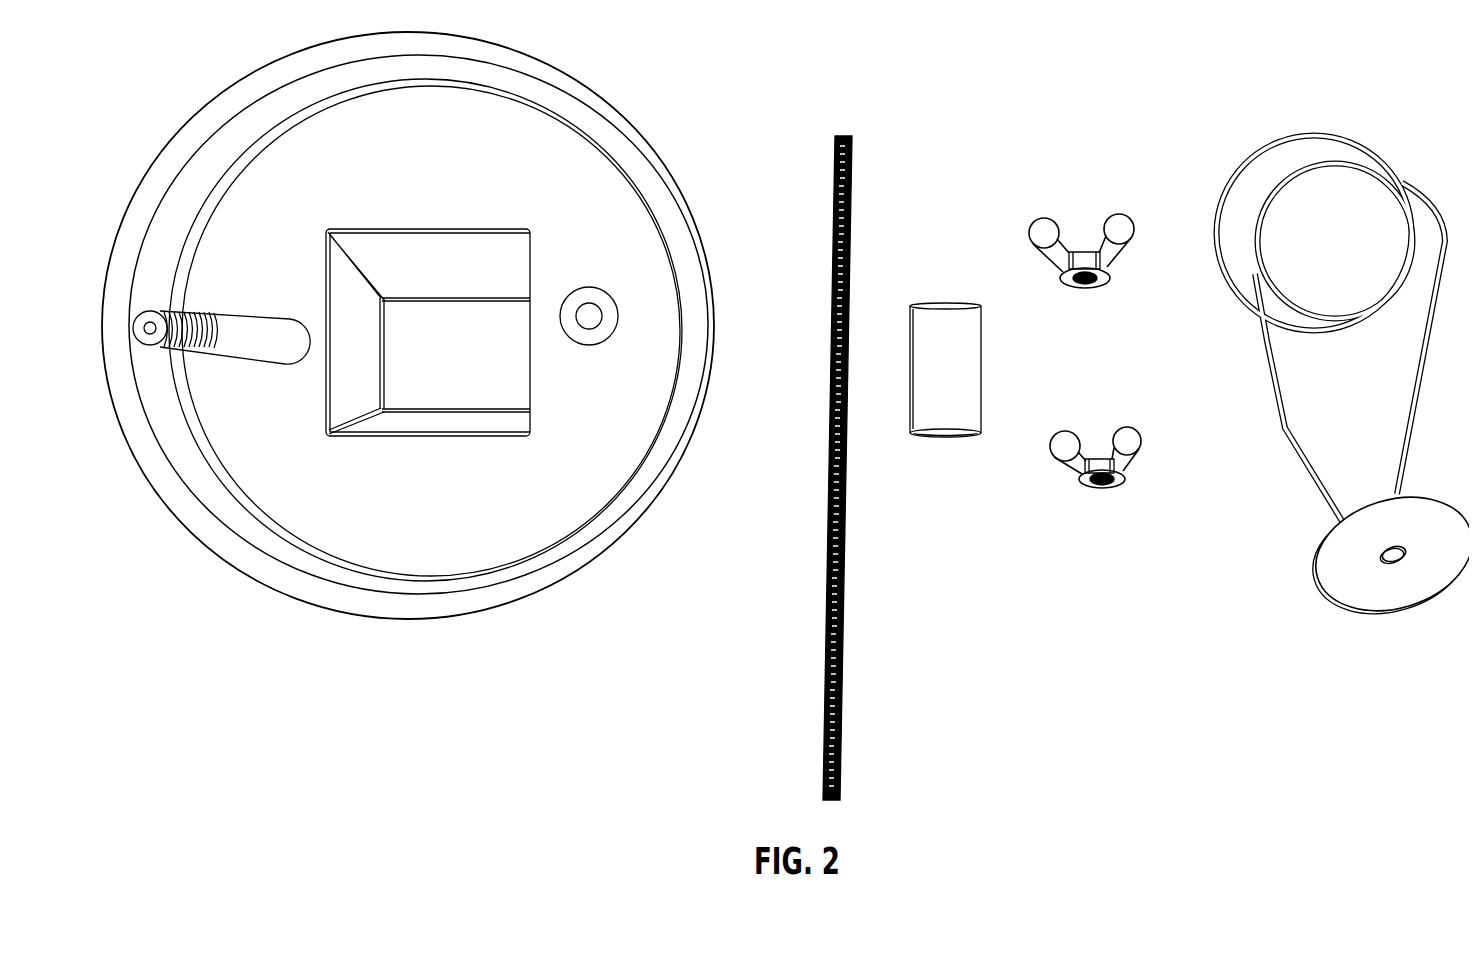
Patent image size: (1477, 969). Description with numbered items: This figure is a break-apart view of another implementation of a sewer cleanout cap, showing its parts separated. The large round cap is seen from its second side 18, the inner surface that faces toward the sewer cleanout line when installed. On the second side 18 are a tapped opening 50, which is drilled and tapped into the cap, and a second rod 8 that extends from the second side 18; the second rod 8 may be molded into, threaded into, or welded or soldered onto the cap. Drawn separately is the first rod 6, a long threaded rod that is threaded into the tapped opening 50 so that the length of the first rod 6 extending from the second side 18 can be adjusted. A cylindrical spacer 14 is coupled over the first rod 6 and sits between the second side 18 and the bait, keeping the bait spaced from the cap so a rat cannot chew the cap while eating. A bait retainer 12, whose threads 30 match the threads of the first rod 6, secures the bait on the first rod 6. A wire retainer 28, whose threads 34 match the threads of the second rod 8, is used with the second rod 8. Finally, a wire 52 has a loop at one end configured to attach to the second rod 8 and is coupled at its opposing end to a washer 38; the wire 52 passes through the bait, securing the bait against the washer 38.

The first rod 6 is at (840, 135).
The second rod 8 is at (250, 322).
The bait retainer 12 is at (1090, 261).
The spacer 14 is at (943, 303).
The second side 18 is at (413, 527).
The wire retainer 28 is at (1108, 465).
The threads 30 is at (1085, 285).
The threads 34 is at (1098, 488).
The washer 38 is at (1432, 512).
The tapped opening 50 is at (580, 292).
The wire 52 is at (1312, 130).